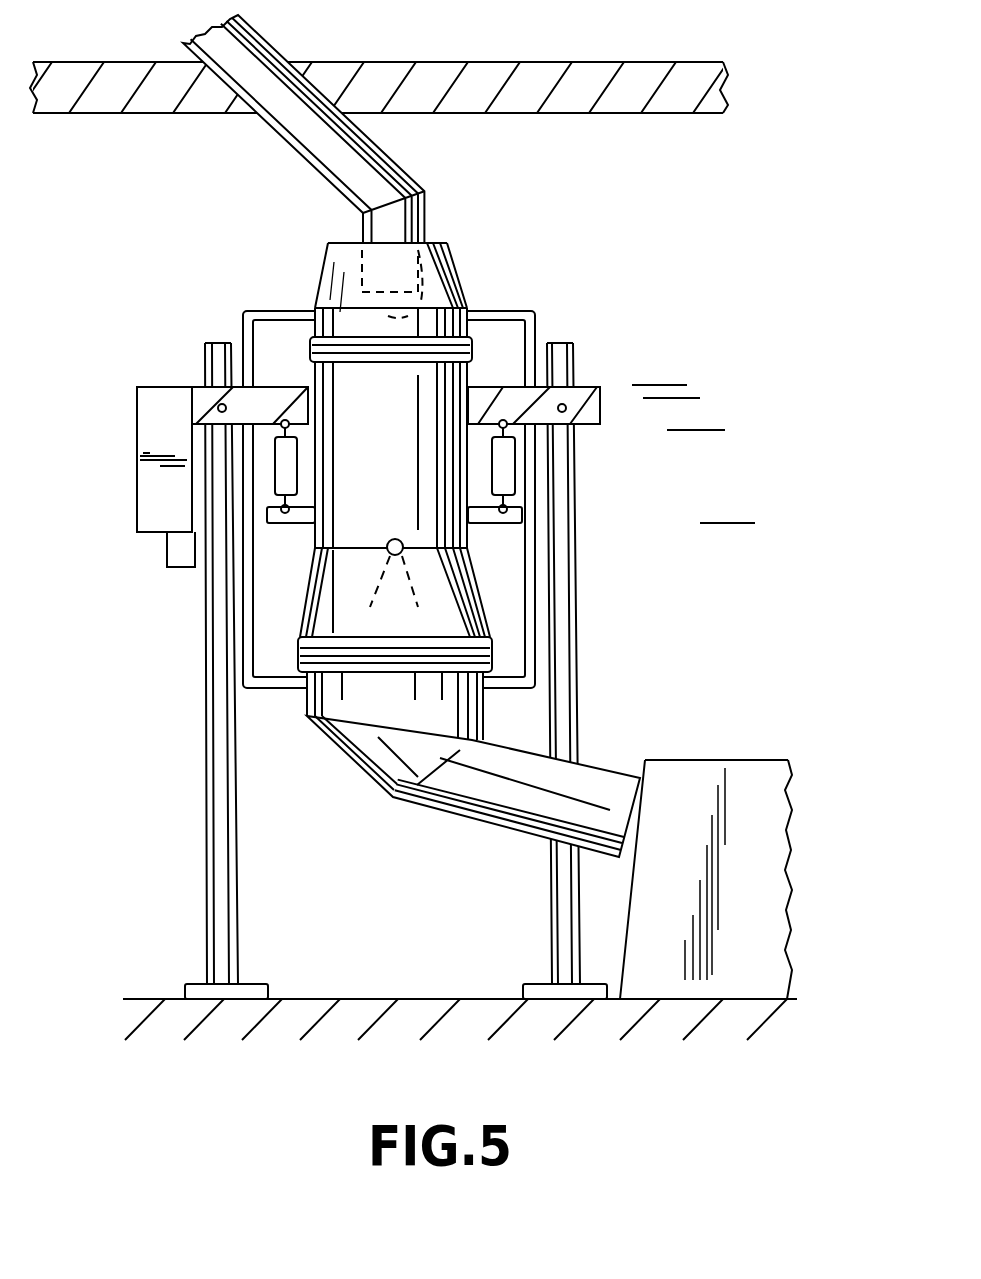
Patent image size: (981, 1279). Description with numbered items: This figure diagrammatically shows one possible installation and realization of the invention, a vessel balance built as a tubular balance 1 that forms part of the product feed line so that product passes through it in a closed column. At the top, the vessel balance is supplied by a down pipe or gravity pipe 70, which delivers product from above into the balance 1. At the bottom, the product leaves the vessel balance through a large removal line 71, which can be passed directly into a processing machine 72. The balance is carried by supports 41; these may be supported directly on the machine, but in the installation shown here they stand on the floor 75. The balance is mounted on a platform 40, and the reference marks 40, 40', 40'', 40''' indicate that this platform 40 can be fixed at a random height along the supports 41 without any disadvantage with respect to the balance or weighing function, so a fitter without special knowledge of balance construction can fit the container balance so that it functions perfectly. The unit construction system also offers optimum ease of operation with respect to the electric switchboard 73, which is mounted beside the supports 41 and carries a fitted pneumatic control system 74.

The tubular balance 1 is at (430, 525).
The platform 40 is at (679, 361).
The platform position 40' is at (706, 378).
The platform position 40'' is at (725, 449).
The platform position 40''' is at (755, 544).
The supports 41 is at (215, 700).
The down pipe or gravity pipe 70 is at (277, 67).
The removal line 71 is at (462, 800).
The processing machine 72 is at (703, 763).
The electric switchboard 73 is at (147, 482).
The pneumatic control system 74 is at (173, 557).
The floor 75 is at (180, 1010).